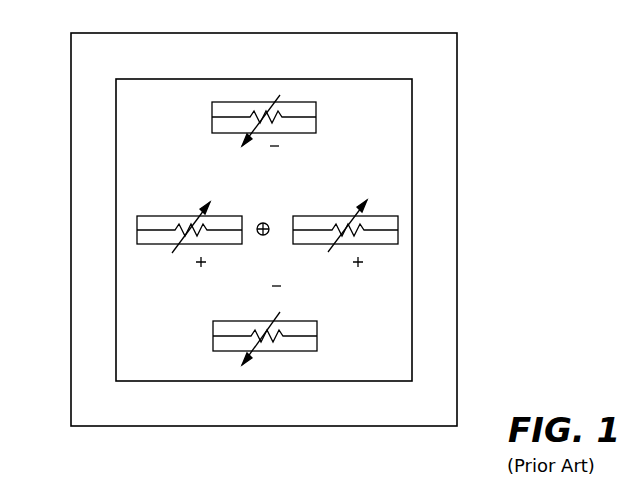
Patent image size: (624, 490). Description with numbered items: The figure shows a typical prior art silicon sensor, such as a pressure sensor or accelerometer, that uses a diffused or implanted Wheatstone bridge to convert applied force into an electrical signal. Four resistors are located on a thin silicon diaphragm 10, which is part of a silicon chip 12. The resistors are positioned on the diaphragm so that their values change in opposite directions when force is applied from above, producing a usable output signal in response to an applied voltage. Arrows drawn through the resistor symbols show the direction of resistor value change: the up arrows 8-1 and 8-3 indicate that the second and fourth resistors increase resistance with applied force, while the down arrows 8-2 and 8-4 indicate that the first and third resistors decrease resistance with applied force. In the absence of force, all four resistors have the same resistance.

The silicon diaphragm 10 is at (412, 118).
The silicon chip 12 is at (457, 168).
The up arrow 8-1 is at (367, 203).
The down arrow 8-2 is at (278, 97).
The up arrow 8-3 is at (172, 253).
The down arrow 8-4 is at (243, 366).